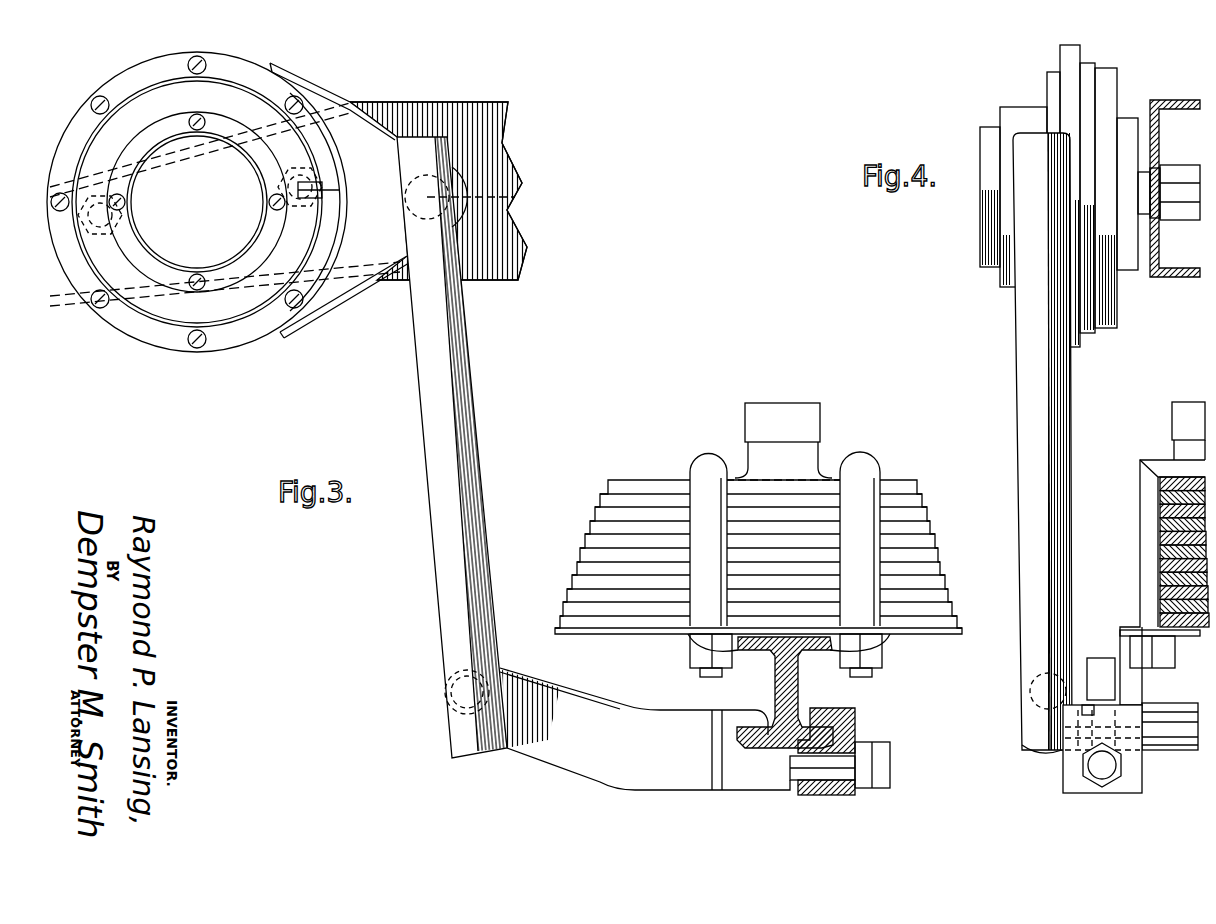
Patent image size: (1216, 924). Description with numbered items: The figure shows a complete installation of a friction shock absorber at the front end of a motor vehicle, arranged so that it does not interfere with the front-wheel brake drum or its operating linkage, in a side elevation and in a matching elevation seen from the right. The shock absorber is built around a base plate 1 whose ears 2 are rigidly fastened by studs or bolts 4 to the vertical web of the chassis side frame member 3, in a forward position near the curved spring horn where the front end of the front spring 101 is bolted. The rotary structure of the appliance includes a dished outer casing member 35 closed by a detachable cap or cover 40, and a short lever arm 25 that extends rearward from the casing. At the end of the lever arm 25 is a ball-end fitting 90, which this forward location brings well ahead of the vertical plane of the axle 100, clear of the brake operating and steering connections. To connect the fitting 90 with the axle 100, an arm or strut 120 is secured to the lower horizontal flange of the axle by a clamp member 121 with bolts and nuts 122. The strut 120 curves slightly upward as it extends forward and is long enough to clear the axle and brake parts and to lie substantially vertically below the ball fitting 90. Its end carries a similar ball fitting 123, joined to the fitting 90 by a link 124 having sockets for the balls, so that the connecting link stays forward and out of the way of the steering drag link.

In FIG. 4, the base plate 1 is at (1135, 118).
In FIG. 4, the ears 2 is at (1133, 207).
In FIG. 3, the side frame member 3 is at (498, 138).
In FIG. 4, the side frame member 3 is at (1158, 140).
In FIG. 3, the studs or bolts 4 is at (318, 176).
In FIG. 4, the studs or bolts 4 is at (1190, 220).
In FIG. 3, the lever arm 25 is at (373, 262).
In FIG. 4, the outer casing member 35 is at (1017, 107).
In FIG. 3, the cap or cover 40 is at (223, 202).
In FIG. 4, the cap or cover 40 is at (977, 140).
In FIG. 3, the ball-end fitting 90 is at (520, 191).
In FIG. 3, the axle 100 is at (798, 698).
In FIG. 4, the axle 100 is at (1172, 748).
In FIG. 3, the front spring 101 is at (917, 523).
In FIG. 4, the front spring 101 is at (1158, 522).
In FIG. 3, the arm or strut 120 is at (633, 785).
In FIG. 4, the arm or strut 120 is at (1105, 640).
In FIG. 3, the clamp member 121 is at (855, 720).
In FIG. 4, the clamp member 121 is at (1143, 785).
In FIG. 3, the bolts and nuts 122 is at (883, 748).
In FIG. 4, the bolts and nuts 122 is at (1075, 779).
In FIG. 3, the ball fitting 123 is at (443, 710).
In FIG. 4, the ball fitting 123 is at (1082, 660).
In FIG. 3, the link 124 is at (480, 436).
In FIG. 4, the link 124 is at (1072, 450).